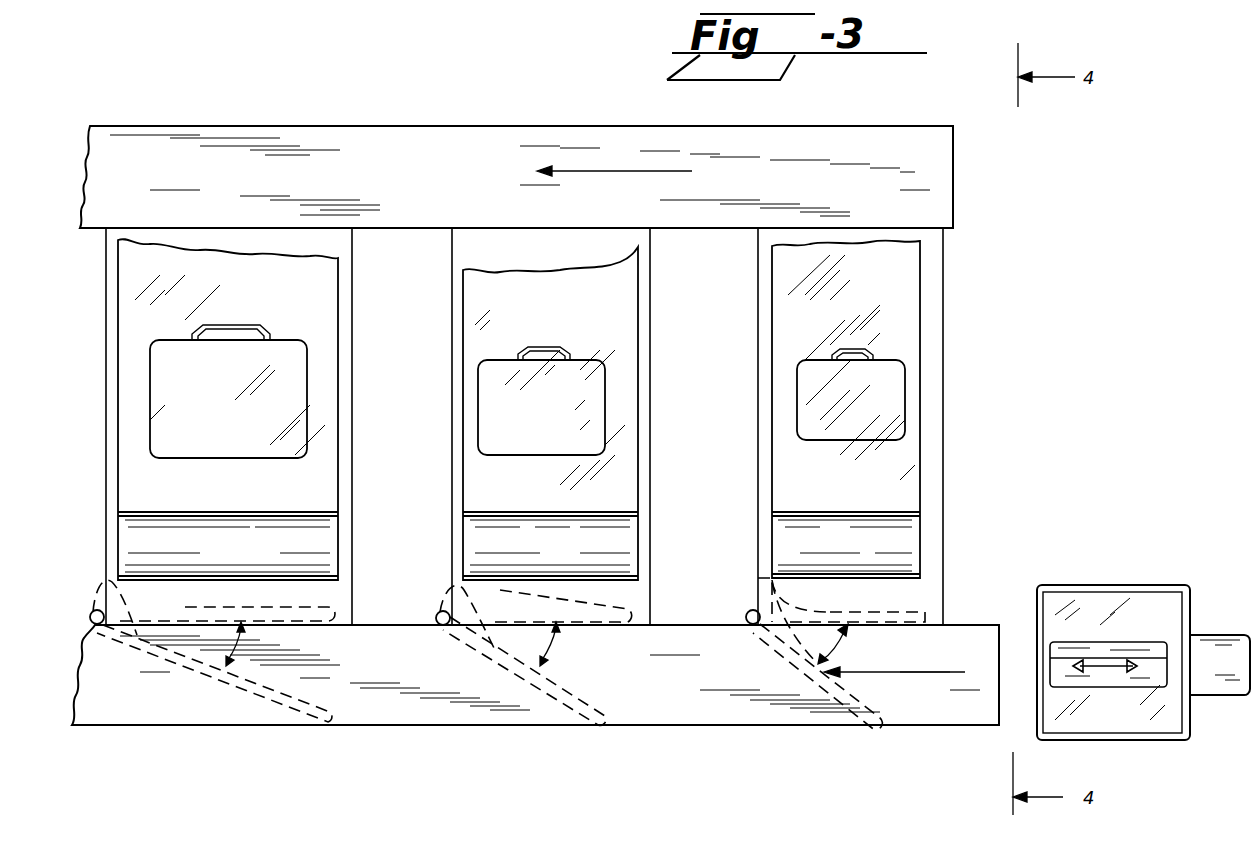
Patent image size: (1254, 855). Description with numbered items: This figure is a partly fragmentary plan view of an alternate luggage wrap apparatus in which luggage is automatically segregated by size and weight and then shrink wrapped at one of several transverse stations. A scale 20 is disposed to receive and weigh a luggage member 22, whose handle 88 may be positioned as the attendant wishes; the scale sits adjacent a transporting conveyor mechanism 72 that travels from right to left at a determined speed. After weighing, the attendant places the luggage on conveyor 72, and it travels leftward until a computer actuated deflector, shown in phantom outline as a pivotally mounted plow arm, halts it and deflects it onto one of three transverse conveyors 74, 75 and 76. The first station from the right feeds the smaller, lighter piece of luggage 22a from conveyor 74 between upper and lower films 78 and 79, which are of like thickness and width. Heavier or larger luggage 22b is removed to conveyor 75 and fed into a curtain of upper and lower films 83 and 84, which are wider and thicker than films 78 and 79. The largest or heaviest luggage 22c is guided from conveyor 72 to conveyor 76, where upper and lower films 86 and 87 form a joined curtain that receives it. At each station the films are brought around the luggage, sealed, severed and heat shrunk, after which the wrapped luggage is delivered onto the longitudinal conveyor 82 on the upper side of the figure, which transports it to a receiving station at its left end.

The scale 20 is at (1123, 595).
The luggage member 22 is at (1158, 680).
The smaller piece of luggage 22a is at (905, 400).
The heavier luggage 22b is at (604, 418).
The luggage 22c is at (302, 392).
The transporting conveyor mechanism 72 is at (912, 720).
The transverse conveyor 74 is at (752, 603).
The transverse conveyor 75 is at (650, 592).
The transverse conveyor 76 is at (352, 468).
The upper film 78 is at (915, 522).
The lower film 79 is at (902, 533).
The longitudinal conveyor 82 is at (953, 160).
The upper film 83 is at (632, 522).
The lower film 84 is at (597, 533).
The upper film 86 is at (336, 538).
The lower film 87 is at (274, 544).
The handle 88 is at (1110, 668).